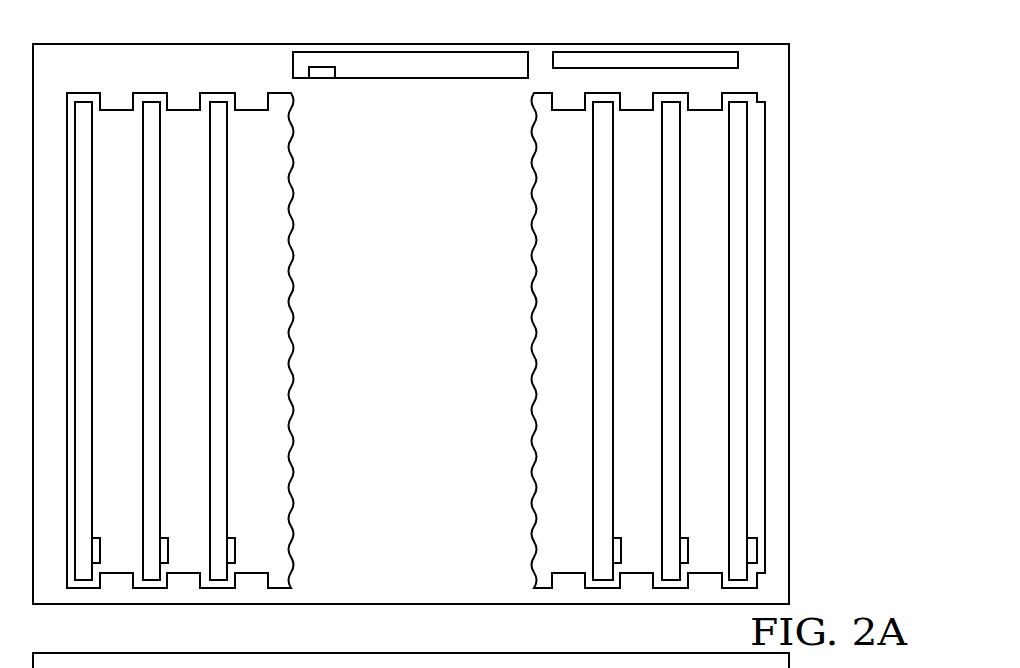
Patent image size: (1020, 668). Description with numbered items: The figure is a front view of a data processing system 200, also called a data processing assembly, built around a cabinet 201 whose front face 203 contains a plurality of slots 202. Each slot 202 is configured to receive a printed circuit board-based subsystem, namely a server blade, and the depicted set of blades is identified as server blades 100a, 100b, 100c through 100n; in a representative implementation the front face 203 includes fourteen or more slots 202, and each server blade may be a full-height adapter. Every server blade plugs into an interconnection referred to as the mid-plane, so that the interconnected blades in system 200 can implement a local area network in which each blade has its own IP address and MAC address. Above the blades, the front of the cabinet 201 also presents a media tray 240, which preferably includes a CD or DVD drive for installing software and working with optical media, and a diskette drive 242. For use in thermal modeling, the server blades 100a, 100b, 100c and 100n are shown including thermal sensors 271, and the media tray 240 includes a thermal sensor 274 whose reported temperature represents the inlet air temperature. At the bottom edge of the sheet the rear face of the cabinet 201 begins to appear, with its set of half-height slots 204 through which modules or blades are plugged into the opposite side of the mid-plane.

In FIG. 2A, the data processing system 200 is at (847, 204).
In FIG. 2A, the cabinet 201 is at (789, 388).
In FIG. 2A, the slots 202 is at (98, 96).
In FIG. 2A, the front face 203 is at (417, 596).
In FIG. 2A, the server blade 100a is at (83, 194).
In FIG. 2A, the server blade 100b is at (152, 194).
In FIG. 2A, the server blade 100c is at (218, 194).
In FIG. 2A, the server blade 100n is at (737, 210).
In FIG. 2A, the thermal sensors 271 is at (100, 549).
In FIG. 2A, the media tray 240 is at (484, 76).
In FIG. 2A, the thermal sensor 274 is at (335, 68).
In FIG. 2A, the diskette drive 242 is at (717, 66).
In FIG. 2B, the half-height slots 204 is at (139, 664).